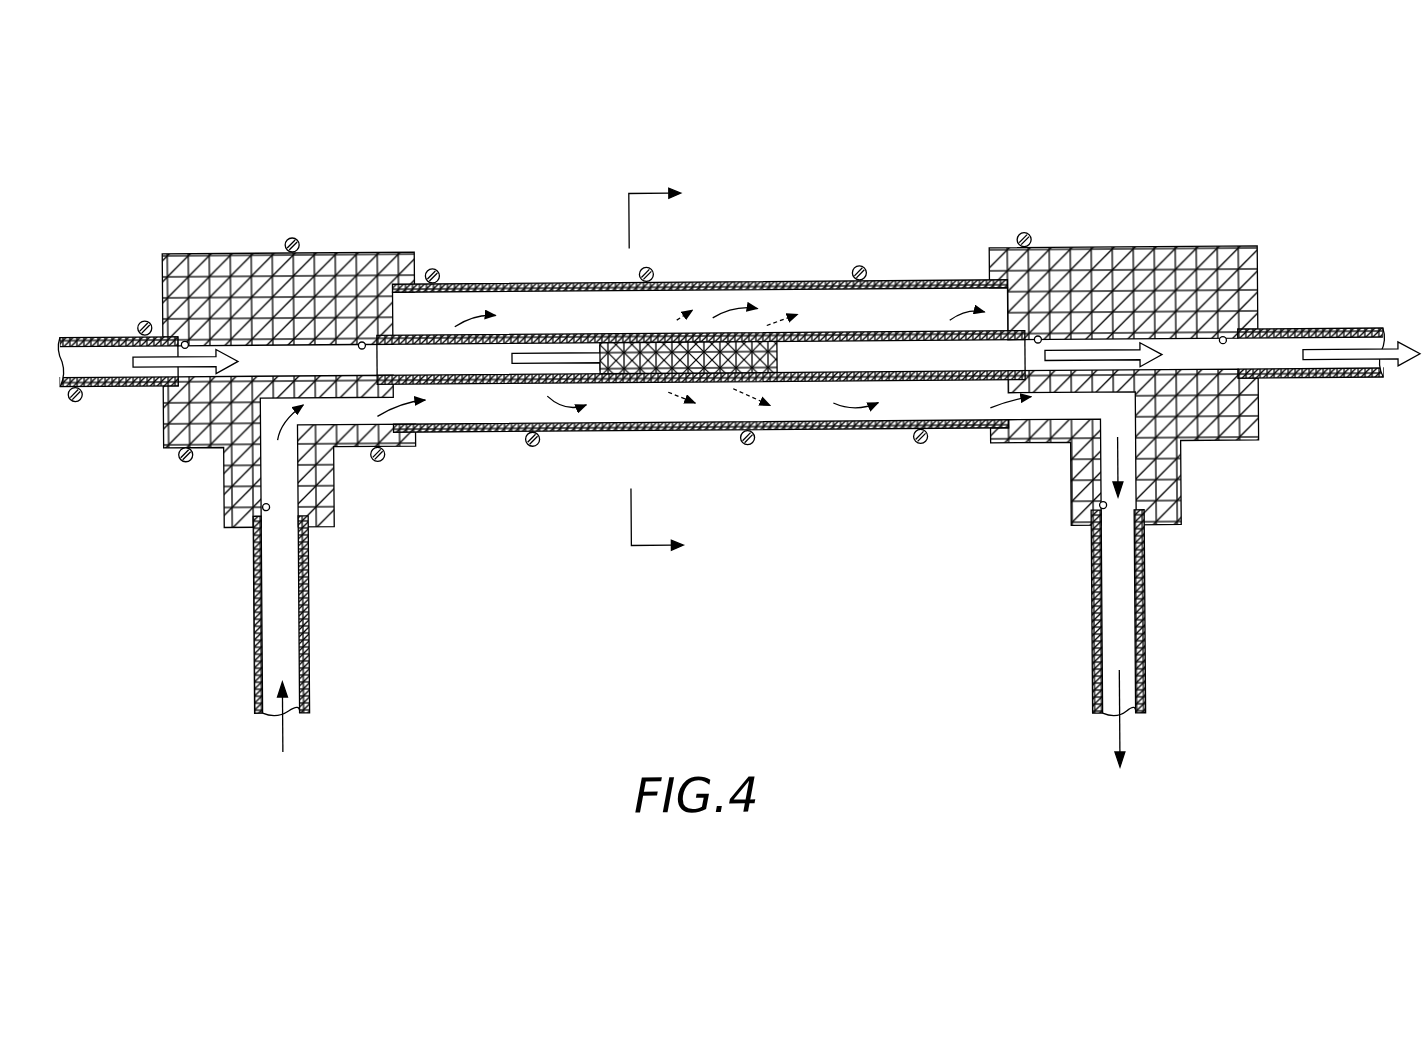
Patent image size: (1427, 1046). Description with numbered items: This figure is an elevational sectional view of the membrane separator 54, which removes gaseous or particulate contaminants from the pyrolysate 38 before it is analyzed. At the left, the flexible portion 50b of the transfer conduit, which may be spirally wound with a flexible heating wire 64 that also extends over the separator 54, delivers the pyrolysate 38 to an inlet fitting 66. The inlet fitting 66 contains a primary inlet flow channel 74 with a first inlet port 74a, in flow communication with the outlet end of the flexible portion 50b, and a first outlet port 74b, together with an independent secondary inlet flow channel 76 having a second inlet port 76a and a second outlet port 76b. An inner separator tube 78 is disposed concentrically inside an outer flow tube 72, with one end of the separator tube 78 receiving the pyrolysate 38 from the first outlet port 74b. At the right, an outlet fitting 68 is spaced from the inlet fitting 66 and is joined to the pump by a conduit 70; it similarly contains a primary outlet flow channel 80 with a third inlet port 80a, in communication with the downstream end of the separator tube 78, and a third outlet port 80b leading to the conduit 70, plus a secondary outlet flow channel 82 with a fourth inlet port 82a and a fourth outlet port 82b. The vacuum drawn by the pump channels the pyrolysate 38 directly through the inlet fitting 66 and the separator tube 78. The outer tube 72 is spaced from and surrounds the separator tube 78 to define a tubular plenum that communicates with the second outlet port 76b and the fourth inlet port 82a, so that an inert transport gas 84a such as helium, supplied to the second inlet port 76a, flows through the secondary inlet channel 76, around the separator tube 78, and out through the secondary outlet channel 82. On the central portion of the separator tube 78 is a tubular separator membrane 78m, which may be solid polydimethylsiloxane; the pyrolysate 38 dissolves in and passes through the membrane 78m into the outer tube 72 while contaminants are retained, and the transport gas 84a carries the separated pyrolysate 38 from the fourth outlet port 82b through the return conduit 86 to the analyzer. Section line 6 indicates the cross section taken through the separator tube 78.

The pyrolysate 38 is at (150, 369).
The flexible portion of transfer conduit 50b is at (95, 331).
The membrane separator 54 is at (945, 237).
The flexible heating wire 64 is at (73, 398).
The inlet fitting 66 is at (228, 248).
The outlet fitting 68 is at (1123, 251).
The conduit 70 is at (1318, 332).
The outer flow tube 72 is at (532, 279).
The primary inlet flow channel 74 is at (283, 369).
The first inlet port 74a is at (185, 338).
The first outlet port 74b is at (362, 340).
The secondary inlet flow channel 76 is at (265, 487).
The second inlet port 76a is at (252, 525).
The second outlet port 76b is at (383, 428).
The inner separator tube 78 is at (880, 330).
The tubular separator membrane 78m is at (643, 333).
The primary outlet flow channel 80 is at (1184, 368).
The third inlet port 80a is at (1038, 339).
The third outlet port 80b is at (1223, 341).
The secondary outlet flow channel 82 is at (1103, 426).
The fourth inlet port 82a is at (1030, 404).
The fourth outlet port 82b is at (1093, 526).
The transport gas 84a is at (283, 737).
The return conduit 86 is at (1145, 616).
The section line 6- 6 is at (664, 369).